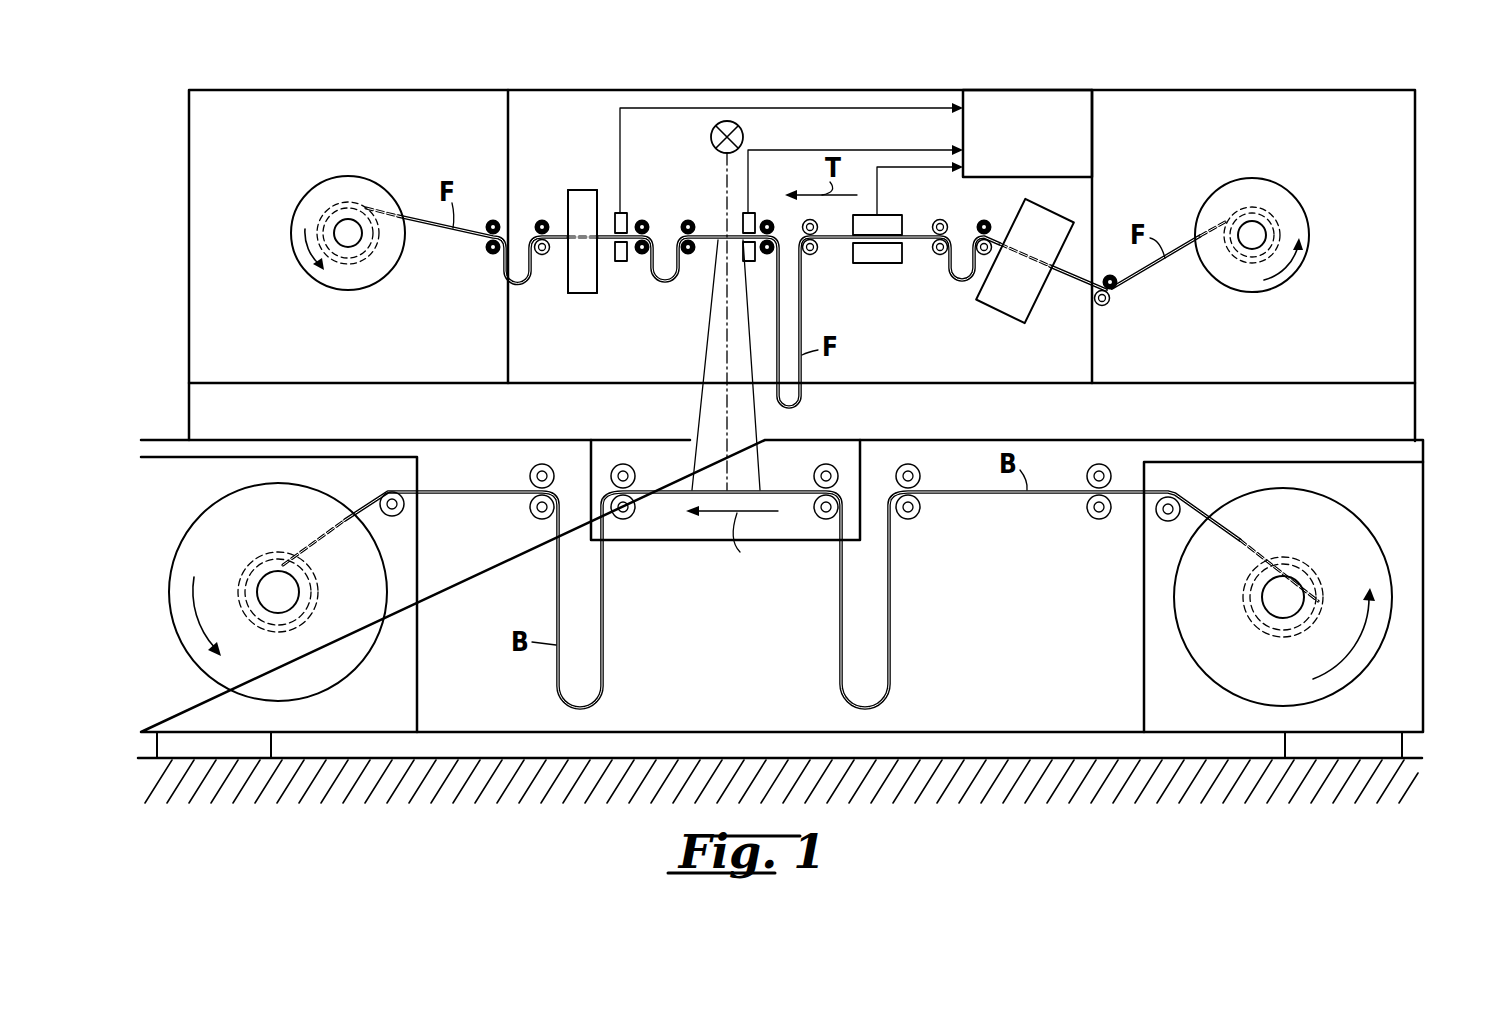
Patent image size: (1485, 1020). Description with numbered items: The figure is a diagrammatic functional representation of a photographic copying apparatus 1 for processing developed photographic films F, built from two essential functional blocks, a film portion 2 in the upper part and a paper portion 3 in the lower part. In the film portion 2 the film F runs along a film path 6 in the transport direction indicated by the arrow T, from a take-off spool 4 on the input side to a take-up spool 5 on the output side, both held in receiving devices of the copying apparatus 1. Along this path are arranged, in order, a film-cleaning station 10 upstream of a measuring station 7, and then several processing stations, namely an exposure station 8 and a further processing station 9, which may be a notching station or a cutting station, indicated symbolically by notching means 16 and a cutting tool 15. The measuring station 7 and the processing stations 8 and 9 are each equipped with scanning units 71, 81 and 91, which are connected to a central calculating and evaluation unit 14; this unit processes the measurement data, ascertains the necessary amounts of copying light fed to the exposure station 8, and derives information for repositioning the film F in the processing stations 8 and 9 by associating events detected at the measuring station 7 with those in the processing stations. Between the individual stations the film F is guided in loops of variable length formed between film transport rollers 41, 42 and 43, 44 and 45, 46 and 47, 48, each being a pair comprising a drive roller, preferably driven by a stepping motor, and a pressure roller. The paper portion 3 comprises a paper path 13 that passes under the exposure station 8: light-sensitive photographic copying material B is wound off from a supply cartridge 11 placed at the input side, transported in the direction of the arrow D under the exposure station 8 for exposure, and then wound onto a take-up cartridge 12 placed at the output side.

The photographic copying apparatus 1 is at (1148, 62).
The film portion 2 is at (1424, 156).
The paper portion 3 is at (1432, 509).
The take-off spool 4 is at (1258, 190).
The take-up spool 5 is at (360, 185).
The film path 6 is at (710, 230).
The measuring station 7 is at (896, 204).
The exposure station 8 is at (713, 192).
The processing station 9 is at (639, 200).
The film-cleaning station 10 is at (1047, 221).
The supply cartridge 11 is at (1400, 560).
The take-up cartridge 12 is at (250, 472).
The paper path 13 is at (672, 488).
The central calculating and evaluation unit 14 is at (1013, 105).
The cutting tool 15 is at (580, 195).
The notching means 16 is at (582, 241).
The film transport rollers 41 is at (985, 225).
The film transport rollers 42 is at (940, 258).
The film transport rollers 43 is at (812, 256).
The film transport rollers 44 is at (770, 250).
The film transport rollers 45 is at (688, 257).
The film transport rollers 46 is at (642, 257).
The film transport rollers 47 is at (542, 218).
The film transport rollers 48 is at (493, 257).
The scanning unit 71 is at (865, 258).
The scanning unit 81 is at (753, 220).
The scanning unit 91 is at (620, 262).